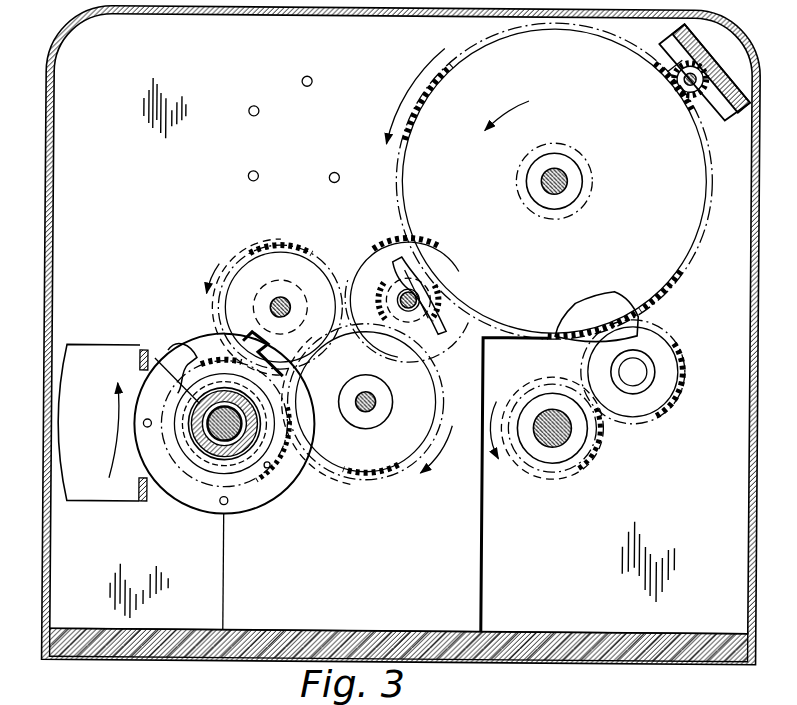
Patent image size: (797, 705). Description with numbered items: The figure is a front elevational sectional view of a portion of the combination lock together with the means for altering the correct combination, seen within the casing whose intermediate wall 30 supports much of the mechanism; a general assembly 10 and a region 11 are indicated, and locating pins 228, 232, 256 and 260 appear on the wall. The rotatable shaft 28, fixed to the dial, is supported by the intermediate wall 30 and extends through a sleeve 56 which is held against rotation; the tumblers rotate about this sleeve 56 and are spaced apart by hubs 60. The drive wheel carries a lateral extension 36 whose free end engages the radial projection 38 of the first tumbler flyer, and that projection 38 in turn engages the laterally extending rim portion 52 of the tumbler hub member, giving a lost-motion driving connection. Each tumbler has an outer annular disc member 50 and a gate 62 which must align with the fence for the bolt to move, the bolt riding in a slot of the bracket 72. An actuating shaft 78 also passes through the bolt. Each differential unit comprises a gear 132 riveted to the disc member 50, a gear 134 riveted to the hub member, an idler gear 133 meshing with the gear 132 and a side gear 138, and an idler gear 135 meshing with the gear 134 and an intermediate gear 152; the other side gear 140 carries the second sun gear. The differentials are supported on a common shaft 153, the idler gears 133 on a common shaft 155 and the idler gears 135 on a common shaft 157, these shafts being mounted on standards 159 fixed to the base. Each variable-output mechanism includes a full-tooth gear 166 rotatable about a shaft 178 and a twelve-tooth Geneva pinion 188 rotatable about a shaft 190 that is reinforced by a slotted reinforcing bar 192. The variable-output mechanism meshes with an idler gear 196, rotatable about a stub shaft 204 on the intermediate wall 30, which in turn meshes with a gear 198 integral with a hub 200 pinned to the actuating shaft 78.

The drive mechanism 10 is at (383, 200).
The tape transport mechanism 11 is at (215, 236).
The rotatable shaft 28 is at (238, 447).
The intermediate wall 30 is at (70, 157).
The lateral extension 36 is at (210, 440).
The radial projection 38 is at (175, 380).
The outer annular disc member 50 is at (293, 487).
The laterally extending rim portion 52 is at (178, 362).
The sleeve 56 is at (252, 452).
The hub 60 is at (247, 450).
The gate 62 is at (275, 354).
The bracket 72 is at (128, 500).
The actuating shaft 78 is at (546, 445).
The gear 132 is at (265, 497).
The idler gear 133 is at (352, 478).
The gear 134 is at (205, 358).
The idler gear 135 is at (315, 252).
The side gear 138 is at (380, 288).
The side gear 140 is at (442, 289).
The intermediate gear 152 is at (422, 253).
The common shaft 153 is at (417, 310).
The common shaft 155 is at (373, 410).
The common shaft 157 is at (292, 310).
The standard 159 is at (465, 594).
The full-tooth gear 166 is at (450, 65).
The shaft 178 is at (572, 176).
The Geneva pinion 188 is at (680, 93).
The shaft 190 is at (674, 60).
The reinforcing bar 192 is at (668, 36).
The idler gear 196 is at (660, 352).
The full tooth gear 198 is at (583, 465).
The hub 200 is at (535, 403).
The stub shaft 204 is at (633, 384).
The pin 228 is at (309, 78).
The pin 232 is at (250, 107).
The pin 256 is at (329, 175).
The pin 260 is at (251, 182).